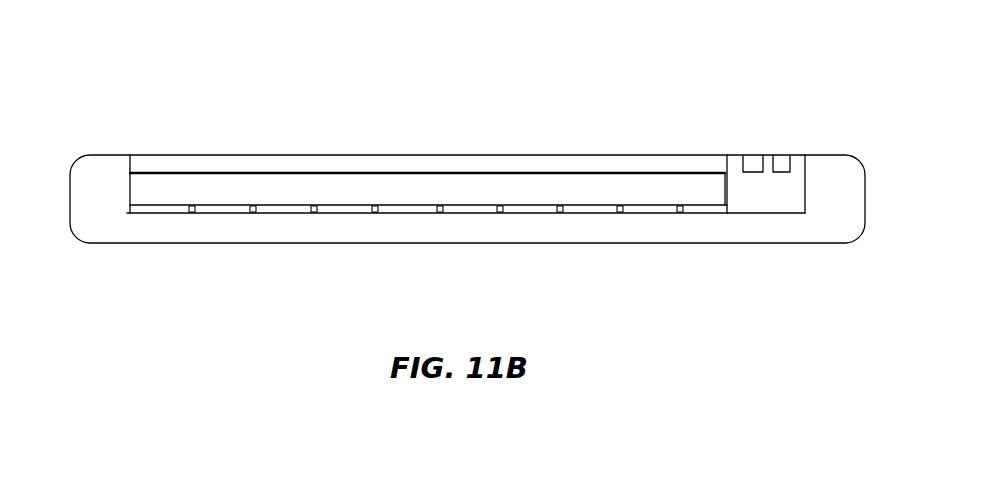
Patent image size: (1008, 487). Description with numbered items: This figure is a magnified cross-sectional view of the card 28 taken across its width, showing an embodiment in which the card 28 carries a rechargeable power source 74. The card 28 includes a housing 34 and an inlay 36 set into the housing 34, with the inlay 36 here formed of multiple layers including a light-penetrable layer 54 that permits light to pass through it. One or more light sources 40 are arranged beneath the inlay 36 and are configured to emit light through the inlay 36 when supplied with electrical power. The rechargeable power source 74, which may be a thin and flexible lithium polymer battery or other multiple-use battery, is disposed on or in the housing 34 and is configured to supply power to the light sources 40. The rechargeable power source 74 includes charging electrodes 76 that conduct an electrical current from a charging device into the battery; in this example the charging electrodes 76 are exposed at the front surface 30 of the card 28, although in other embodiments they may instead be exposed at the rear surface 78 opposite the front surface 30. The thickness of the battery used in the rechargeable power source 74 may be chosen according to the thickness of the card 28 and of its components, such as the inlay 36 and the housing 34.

The front surface 30 is at (298, 108).
The housing component 34 is at (108, 213).
The card 28 is at (455, 330).
The light-penetrable layer 54 is at (338, 178).
The inlay component 36 is at (507, 80).
The rechargeable power source 74 is at (776, 197).
The charging electrodes 76 is at (752, 160).
The light sources 40 is at (160, 214).
The rear surface 78 is at (743, 263).